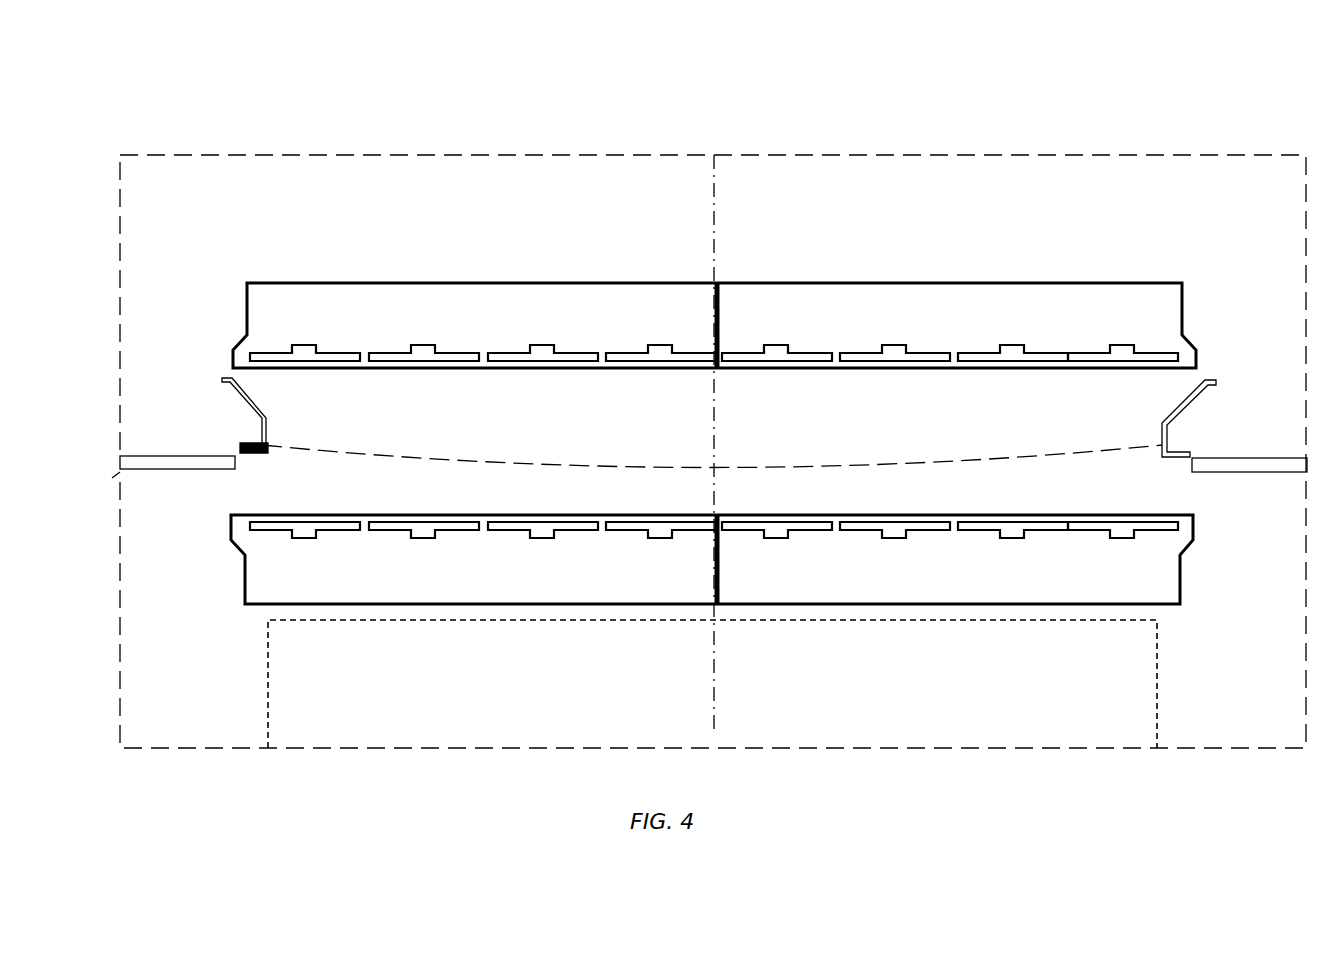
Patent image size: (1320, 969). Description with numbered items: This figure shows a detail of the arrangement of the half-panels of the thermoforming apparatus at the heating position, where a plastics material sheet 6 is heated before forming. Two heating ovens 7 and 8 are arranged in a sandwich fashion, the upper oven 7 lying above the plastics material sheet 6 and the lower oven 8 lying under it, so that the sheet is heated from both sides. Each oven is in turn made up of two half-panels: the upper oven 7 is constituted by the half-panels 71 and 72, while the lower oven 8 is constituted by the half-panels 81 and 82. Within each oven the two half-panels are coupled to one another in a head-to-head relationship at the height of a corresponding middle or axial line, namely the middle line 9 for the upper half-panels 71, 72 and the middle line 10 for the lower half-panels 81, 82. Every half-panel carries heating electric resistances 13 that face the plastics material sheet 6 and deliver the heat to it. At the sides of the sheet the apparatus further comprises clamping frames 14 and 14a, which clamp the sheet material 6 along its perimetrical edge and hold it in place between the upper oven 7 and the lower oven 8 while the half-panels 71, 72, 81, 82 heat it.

The clamping frame 14 is at (218, 380).
The clamping frame 14a is at (262, 453).
The plastics material sheet 6 is at (315, 448).
The heating oven 7 is at (1177, 279).
The half-panel 71 is at (474, 320).
The half-panel 72 is at (962, 321).
The heating electric resistances 13 is at (657, 352).
The middle or axial line 9 is at (717, 265).
The heating oven 8 is at (1173, 628).
The half-panel 81 is at (473, 582).
The half-panel 82 is at (960, 585).
The middle or axial line 10 is at (714, 691).